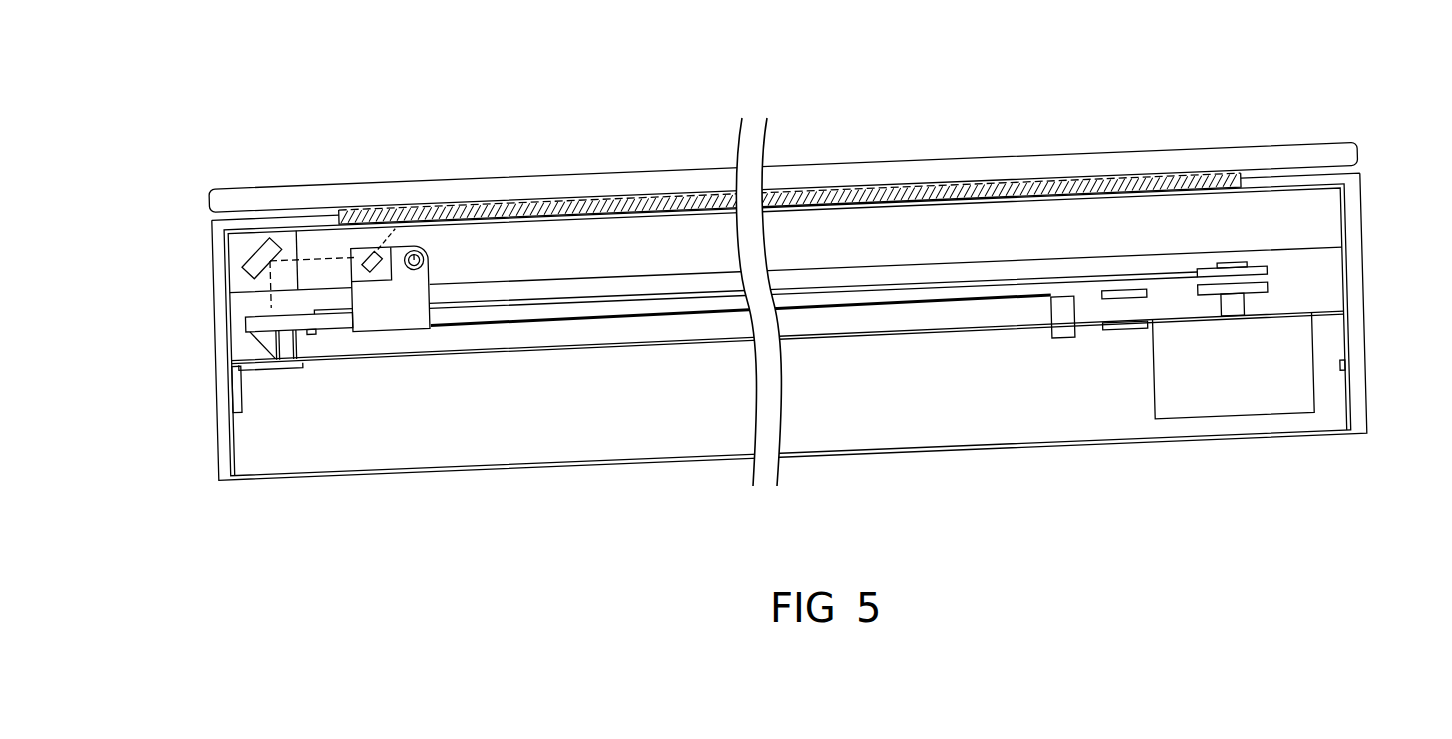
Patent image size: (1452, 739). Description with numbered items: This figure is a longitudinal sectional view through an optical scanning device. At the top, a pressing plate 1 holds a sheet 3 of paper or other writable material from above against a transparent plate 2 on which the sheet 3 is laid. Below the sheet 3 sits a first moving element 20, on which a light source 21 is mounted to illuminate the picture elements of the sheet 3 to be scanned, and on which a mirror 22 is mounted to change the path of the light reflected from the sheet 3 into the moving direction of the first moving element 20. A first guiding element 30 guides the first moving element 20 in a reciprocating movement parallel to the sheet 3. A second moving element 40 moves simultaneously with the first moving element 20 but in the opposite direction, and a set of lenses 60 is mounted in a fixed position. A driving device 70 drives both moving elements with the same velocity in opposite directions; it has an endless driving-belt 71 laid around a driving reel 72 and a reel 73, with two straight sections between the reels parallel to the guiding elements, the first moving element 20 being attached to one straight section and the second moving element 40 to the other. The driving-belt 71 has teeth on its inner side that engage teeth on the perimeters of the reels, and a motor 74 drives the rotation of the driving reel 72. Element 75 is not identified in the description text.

The pressing plate 1 is at (1007, 163).
The transparent plate 2 is at (947, 190).
The sheet 3 is at (973, 190).
The first moving element 20 is at (410, 317).
The light source 21 is at (432, 259).
The mirror 22 is at (363, 262).
The first guiding element 30 is at (636, 288).
The second moving element 40 is at (1128, 312).
The set of lenses 60 is at (244, 256).
The driving device 70 is at (1304, 293).
The driving-belt 71 is at (998, 292).
The driving reel 72 is at (1245, 268).
The reel 73 is at (308, 338).
The motor 74 is at (1247, 393).
The base plate 75 is at (852, 340).